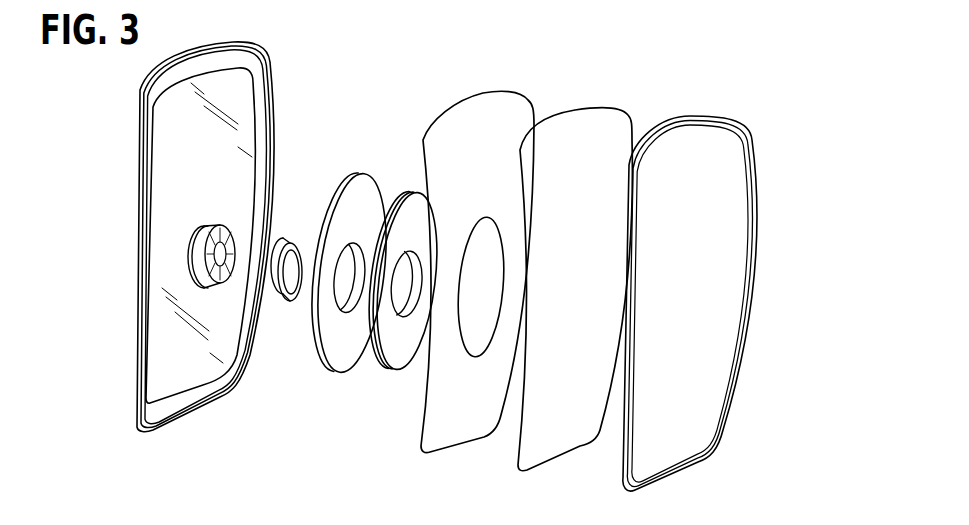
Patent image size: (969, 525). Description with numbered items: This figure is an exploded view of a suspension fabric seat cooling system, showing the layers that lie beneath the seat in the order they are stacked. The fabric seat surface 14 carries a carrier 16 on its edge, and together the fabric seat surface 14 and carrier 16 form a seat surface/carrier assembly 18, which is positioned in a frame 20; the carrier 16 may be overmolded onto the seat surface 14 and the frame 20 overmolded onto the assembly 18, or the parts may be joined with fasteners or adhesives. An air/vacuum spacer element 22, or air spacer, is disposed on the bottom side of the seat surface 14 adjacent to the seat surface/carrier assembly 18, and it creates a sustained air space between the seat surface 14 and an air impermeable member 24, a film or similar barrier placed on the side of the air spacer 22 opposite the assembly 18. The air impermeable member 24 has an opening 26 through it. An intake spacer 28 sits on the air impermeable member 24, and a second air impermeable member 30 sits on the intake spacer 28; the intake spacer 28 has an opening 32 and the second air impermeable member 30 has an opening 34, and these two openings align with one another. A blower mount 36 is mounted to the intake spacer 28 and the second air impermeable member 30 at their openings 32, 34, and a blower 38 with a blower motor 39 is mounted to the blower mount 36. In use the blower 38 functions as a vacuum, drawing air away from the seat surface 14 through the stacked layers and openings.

The fabric seat surface 14 is at (698, 140).
The carrier 16 is at (748, 128).
The seat surface/carrier assembly 18 is at (732, 282).
The frame 20 is at (150, 287).
The air/vacuum spacer element 22 is at (597, 120).
The air impermeable member 24 is at (461, 249).
The opening 26 is at (473, 360).
The intake spacer 28 is at (396, 283).
The second air impermeable member 30 is at (348, 278).
The opening of intake spacer 32 is at (405, 268).
The opening of second air impermeable member 34 is at (347, 257).
The blower mount 36 is at (287, 303).
The blower 38 is at (166, 333).
The blower motor 39 is at (226, 283).